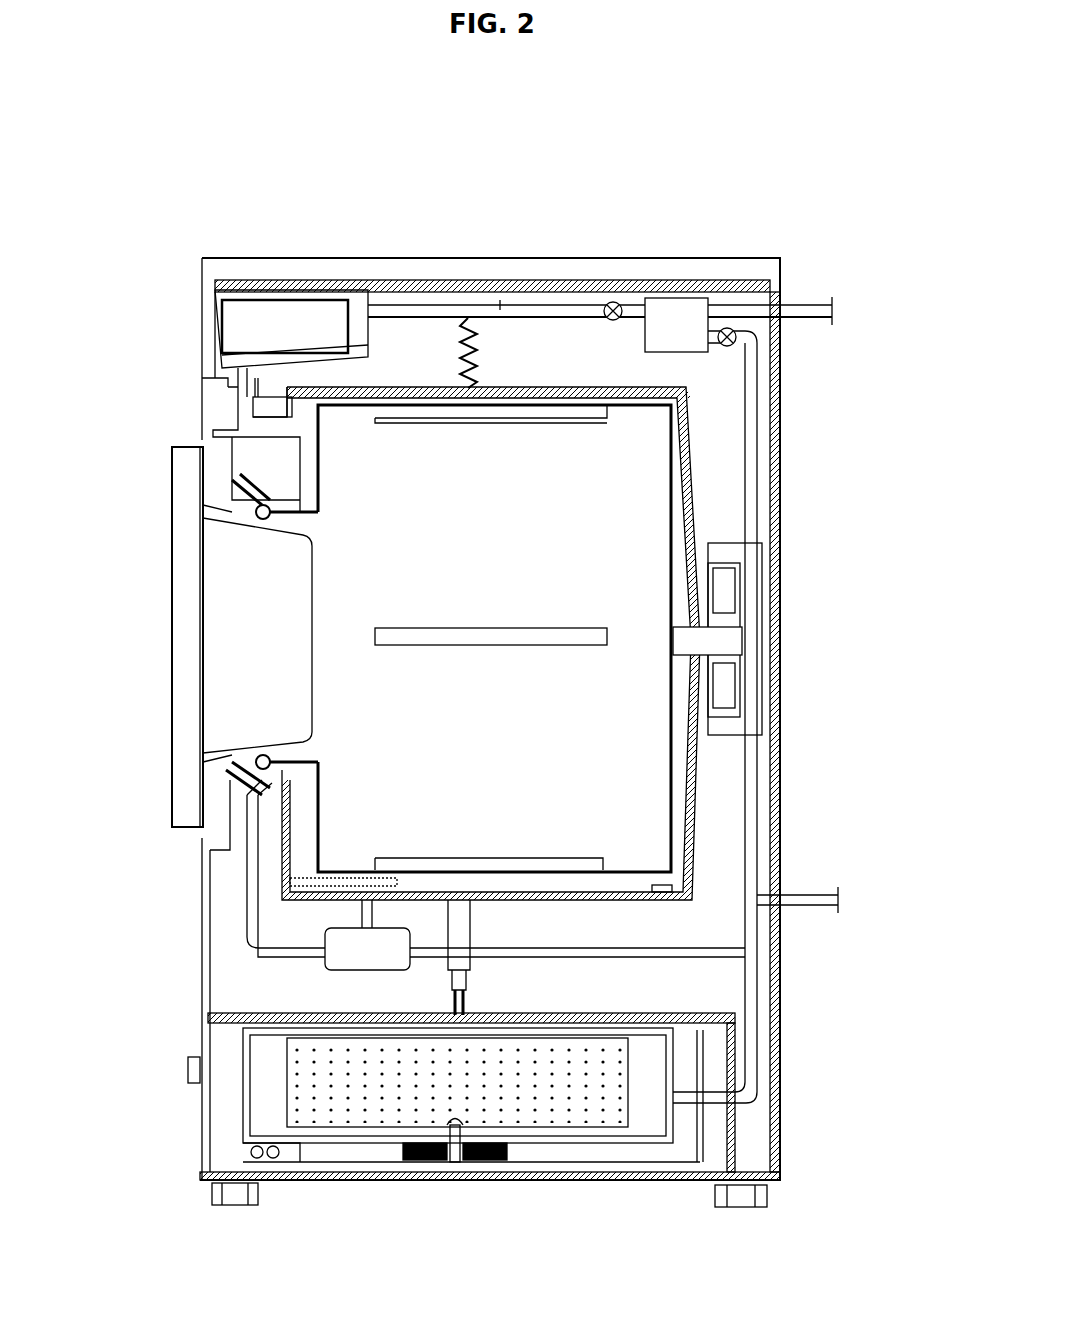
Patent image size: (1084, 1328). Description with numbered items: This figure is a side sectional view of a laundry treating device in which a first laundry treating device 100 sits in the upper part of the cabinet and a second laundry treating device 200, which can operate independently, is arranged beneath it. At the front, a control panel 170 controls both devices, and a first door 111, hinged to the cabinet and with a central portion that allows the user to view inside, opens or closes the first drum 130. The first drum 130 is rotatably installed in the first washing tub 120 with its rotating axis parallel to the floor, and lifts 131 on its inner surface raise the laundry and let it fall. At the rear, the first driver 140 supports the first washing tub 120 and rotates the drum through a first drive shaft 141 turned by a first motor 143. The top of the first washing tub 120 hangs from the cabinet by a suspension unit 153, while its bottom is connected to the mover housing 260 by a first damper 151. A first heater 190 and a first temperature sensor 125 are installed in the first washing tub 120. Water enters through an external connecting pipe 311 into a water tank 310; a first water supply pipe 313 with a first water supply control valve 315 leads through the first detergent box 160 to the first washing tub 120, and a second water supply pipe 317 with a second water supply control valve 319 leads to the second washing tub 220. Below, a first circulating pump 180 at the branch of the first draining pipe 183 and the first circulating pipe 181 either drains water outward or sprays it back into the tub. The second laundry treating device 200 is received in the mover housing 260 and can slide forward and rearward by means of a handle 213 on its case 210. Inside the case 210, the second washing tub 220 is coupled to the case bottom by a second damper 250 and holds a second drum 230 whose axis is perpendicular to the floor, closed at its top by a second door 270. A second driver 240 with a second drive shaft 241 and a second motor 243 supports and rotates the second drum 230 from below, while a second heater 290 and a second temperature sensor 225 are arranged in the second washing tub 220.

The first laundry treating device 100 is at (164, 670).
The first door 111 is at (193, 592).
The first washing tub 120 is at (240, 418).
The first temperature sensor 125 is at (662, 880).
The first drum 130 is at (330, 458).
The lifts 131 is at (485, 632).
The first driver 140 is at (878, 580).
The first drive shaft 141 is at (718, 615).
The first motor 143 is at (750, 640).
The first damper 151 is at (458, 895).
The suspension unit 153 is at (458, 340).
The first detergent box 160 is at (290, 314).
The control panel 170 is at (210, 328).
The first circulating pump 180 is at (330, 945).
The first circulating pipe 181 is at (258, 890).
The first draining pipe 183 is at (800, 892).
The first heater 190 is at (340, 876).
The second laundry treating device 200 is at (197, 1120).
The case 210 is at (214, 1042).
The handle 213 is at (186, 1066).
The second washing tub 220 is at (288, 1075).
The second temperature sensor 225 is at (668, 1145).
The second drum 230 is at (300, 1150).
The second driver 240 is at (425, 1165).
The second drive shaft 241 is at (455, 1165).
The second motor 243 is at (495, 1160).
The second damper 250 is at (215, 1195).
The mover housing 260 is at (750, 1165).
The second door 270 is at (320, 1020).
The second heater 290 is at (250, 1146).
The water tank 310 is at (680, 305).
The external connecting pipe 311 is at (808, 308).
The first water supply pipe 313 is at (500, 310).
The first water supply control valve 315 is at (613, 302).
The second water supply pipe 317 is at (760, 384).
The second water supply control valve 319 is at (730, 328).